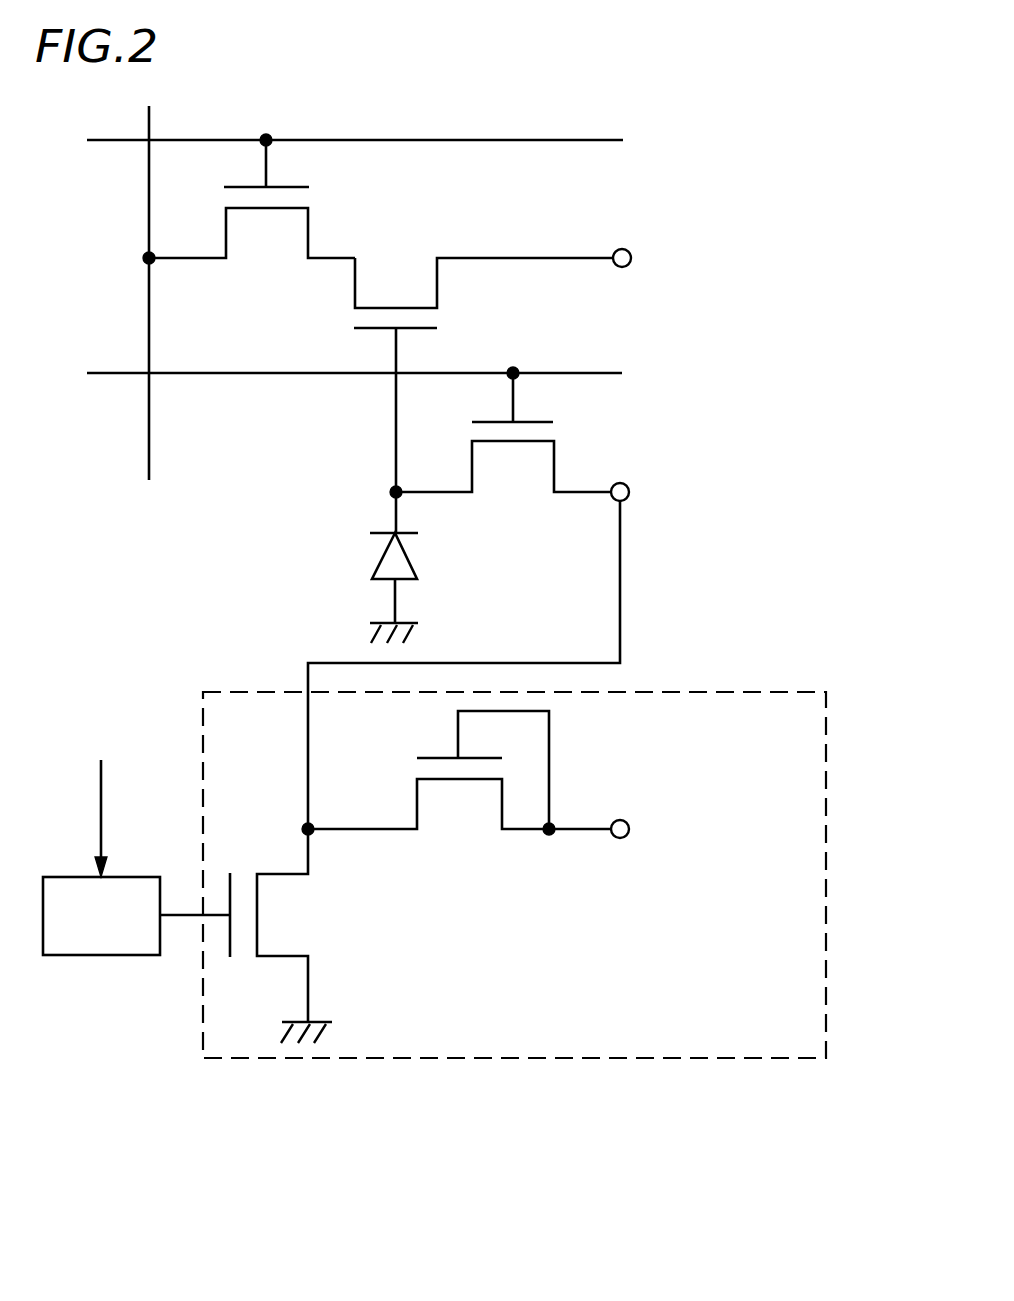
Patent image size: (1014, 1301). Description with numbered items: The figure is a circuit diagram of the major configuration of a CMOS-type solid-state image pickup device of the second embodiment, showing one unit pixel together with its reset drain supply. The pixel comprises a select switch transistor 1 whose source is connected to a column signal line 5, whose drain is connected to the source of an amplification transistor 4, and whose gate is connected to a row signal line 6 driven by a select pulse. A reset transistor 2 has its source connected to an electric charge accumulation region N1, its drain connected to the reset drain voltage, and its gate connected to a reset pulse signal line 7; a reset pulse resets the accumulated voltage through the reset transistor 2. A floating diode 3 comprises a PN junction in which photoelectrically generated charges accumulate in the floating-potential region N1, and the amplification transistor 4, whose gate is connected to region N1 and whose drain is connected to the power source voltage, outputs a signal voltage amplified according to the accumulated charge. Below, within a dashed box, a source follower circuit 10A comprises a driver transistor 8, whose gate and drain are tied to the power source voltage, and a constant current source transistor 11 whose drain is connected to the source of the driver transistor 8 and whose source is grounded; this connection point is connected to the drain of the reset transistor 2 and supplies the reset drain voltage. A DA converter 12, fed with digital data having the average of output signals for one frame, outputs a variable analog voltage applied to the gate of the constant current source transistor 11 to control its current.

The select switch transistor 1 is at (308, 198).
The reset transistor 2 is at (555, 430).
The floating diode 3 is at (378, 557).
The amplification transistor 4 is at (347, 316).
The column signal line 5 is at (150, 444).
The row signal line 6 is at (523, 140).
The reset pulse signal line 7 is at (577, 373).
The driver transistor 8 is at (409, 769).
The electric charge accumulation region N1 is at (392, 490).
The source follower circuit 10A is at (471, 1060).
The constant current source transistor 11 is at (296, 917).
The DA converter 12 is at (112, 955).